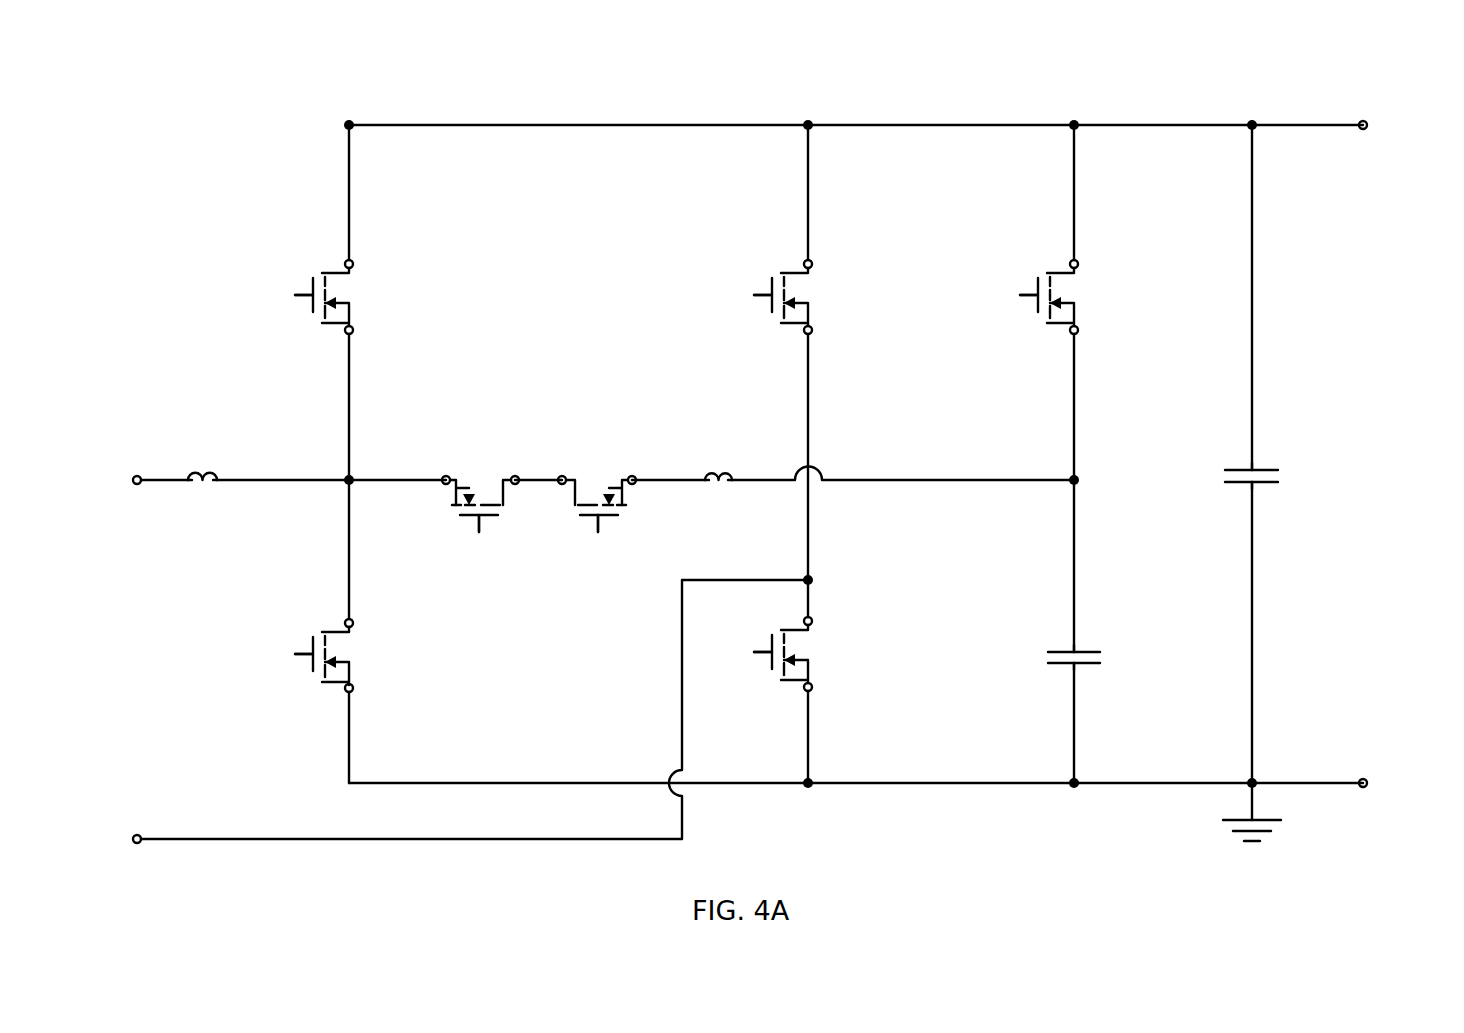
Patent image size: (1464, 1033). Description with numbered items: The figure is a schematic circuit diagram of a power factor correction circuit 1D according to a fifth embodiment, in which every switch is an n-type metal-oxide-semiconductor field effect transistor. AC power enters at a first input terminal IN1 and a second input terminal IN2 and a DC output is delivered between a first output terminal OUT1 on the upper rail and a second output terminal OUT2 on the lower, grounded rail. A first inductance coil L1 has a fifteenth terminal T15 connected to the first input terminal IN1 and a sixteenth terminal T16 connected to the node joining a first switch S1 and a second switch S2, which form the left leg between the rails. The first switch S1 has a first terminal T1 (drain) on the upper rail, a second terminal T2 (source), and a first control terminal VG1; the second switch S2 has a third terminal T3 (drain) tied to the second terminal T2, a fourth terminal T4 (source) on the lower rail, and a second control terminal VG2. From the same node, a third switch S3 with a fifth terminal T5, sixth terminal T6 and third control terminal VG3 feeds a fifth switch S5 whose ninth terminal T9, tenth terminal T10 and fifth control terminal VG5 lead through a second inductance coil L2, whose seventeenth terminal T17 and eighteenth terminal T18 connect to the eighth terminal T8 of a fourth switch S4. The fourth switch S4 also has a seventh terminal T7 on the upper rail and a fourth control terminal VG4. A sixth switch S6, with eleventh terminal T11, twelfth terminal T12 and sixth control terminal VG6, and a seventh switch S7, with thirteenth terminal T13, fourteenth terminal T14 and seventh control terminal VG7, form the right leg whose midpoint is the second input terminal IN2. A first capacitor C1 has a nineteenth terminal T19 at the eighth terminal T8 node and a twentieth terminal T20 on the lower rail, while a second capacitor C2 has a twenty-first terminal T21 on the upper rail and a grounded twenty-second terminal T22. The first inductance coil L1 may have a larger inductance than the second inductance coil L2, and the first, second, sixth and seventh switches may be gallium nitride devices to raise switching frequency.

The power factor correction circuit 1D is at (162, 92).
The first switch S1 is at (341, 297).
The second switch S2 is at (341, 656).
The third switch S3 is at (480, 491).
The fourth switch S4 is at (1066, 297).
The fifth switch S5 is at (597, 491).
The sixth switch S6 is at (800, 297).
The seventh switch S7 is at (800, 654).
The first terminal T1 is at (353, 264).
The second terminal T2 is at (353, 331).
The third terminal T3 is at (353, 623).
The fourth terminal T4 is at (353, 689).
The fifth terminal T5 is at (446, 476).
The sixth terminal T6 is at (515, 476).
The seventh terminal T7 is at (1078, 264).
The eighth terminal T8 is at (1078, 331).
The ninth terminal T9 is at (562, 476).
The tenth terminal T10 is at (632, 476).
The eleventh terminal T11 is at (812, 264).
The twelfth terminal T12 is at (812, 331).
The thirteenth terminal T13 is at (812, 621).
The fourteenth terminal T14 is at (812, 688).
The fifteenth terminal T15 is at (190, 478).
The sixteenth terminal T16 is at (215, 478).
The seventeenth terminal T17 is at (707, 478).
The eighteenth terminal T18 is at (730, 478).
The nineteenth terminal T19 is at (1082, 652).
The twentieth terminal T20 is at (1082, 663).
The twenty-first terminal T21 is at (1258, 470).
The twenty-second terminal T22 is at (1258, 482).
The first inductance coil L1 is at (205, 460).
The second inductance coil L2 is at (720, 494).
The first capacitor C1 is at (1056, 660).
The second capacitor C2 is at (1231, 478).
The first control terminal VG1 is at (296, 293).
The second control terminal VG2 is at (296, 652).
The third control terminal VG3 is at (479, 532).
The fourth control terminal VG4 is at (1022, 293).
The fifth control terminal VG5 is at (598, 532).
The sixth control terminal VG6 is at (756, 293).
The seventh control terminal VG7 is at (756, 650).
The first input terminal IN1 is at (113, 480).
The second input terminal IN2 is at (113, 839).
The first output terminal OUT1 is at (1408, 125).
The second output terminal OUT2 is at (1408, 783).